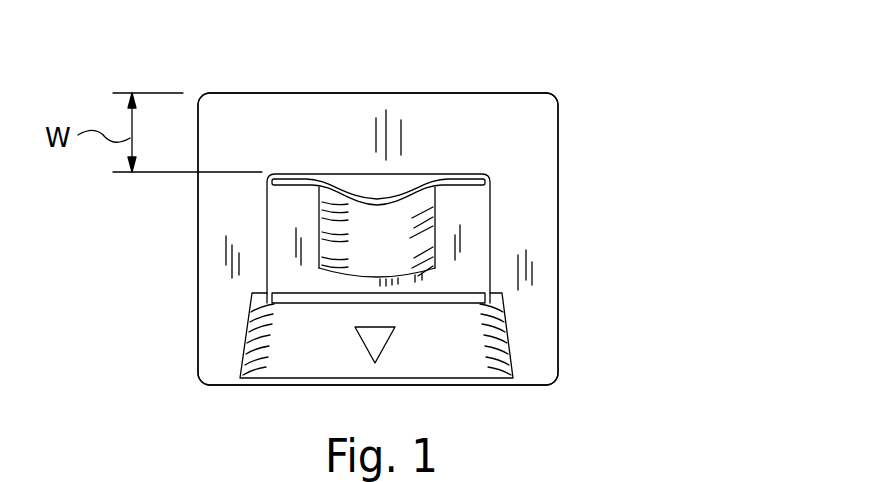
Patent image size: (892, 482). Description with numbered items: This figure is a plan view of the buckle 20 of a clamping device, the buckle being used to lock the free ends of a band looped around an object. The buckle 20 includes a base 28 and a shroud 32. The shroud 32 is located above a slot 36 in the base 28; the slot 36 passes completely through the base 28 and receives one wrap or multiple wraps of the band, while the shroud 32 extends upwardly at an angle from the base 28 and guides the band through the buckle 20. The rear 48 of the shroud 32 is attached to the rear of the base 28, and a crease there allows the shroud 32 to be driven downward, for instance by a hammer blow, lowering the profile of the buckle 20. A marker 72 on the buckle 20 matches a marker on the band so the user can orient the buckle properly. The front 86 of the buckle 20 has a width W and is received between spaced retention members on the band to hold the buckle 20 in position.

The buckle 20 is at (608, 297).
The base 28 is at (558, 149).
The shroud 32 is at (478, 226).
The slot 36 is at (367, 184).
The rear of the shroud 48 is at (286, 285).
The marker 72 is at (378, 345).
The front of the buckle 86 is at (460, 111).